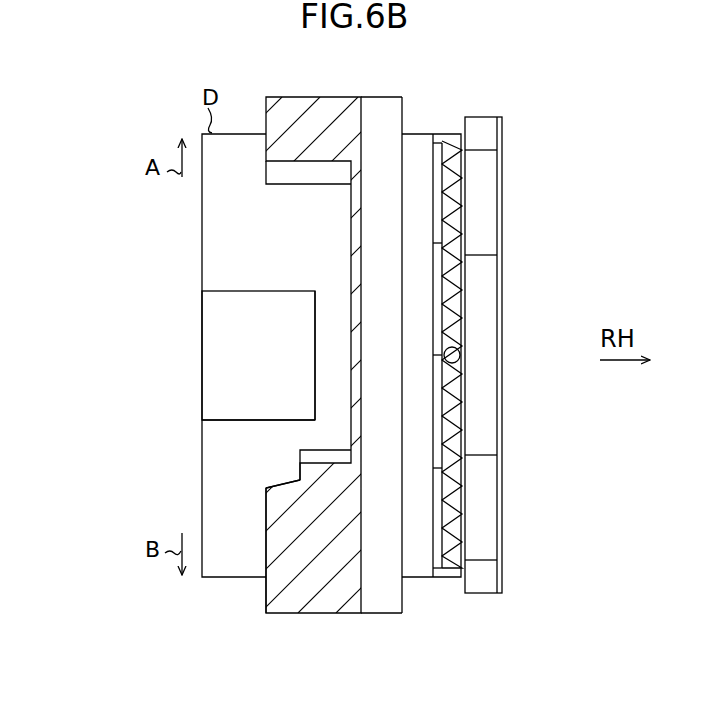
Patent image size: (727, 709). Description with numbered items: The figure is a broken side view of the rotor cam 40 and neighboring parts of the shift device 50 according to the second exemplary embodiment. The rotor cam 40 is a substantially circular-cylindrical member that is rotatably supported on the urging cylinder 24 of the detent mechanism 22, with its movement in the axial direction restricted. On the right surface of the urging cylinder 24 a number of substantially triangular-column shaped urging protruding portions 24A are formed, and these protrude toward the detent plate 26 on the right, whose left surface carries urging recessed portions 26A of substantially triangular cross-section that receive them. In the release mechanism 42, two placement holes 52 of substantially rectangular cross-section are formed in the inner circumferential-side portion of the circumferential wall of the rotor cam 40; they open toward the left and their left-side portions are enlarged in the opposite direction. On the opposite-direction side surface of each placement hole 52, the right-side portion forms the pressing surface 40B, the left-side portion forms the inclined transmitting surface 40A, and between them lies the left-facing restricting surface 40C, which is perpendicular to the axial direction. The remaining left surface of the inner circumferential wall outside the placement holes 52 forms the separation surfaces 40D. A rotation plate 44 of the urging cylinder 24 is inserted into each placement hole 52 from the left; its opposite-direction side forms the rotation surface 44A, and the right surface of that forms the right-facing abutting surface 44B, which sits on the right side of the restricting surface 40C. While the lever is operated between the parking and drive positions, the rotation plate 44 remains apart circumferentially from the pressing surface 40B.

The detent mechanism 22 is at (445, 115).
The urging cylinder 24 is at (202, 222).
The urging protruding portion 24A is at (446, 372).
The detent plate 26 is at (503, 172).
The urging recessed portion 26A is at (447, 360).
The rotor cam 40 is at (333, 97).
The transmitting surface 40A is at (285, 474).
The pressing surface 40B is at (318, 457).
The restricting surface 40C is at (300, 465).
The separation surface 40D is at (266, 540).
The release mechanism 42 is at (220, 472).
The rotation plate 44 is at (250, 291).
The rotation surface 44A is at (218, 421).
The abutting surface 44B is at (316, 310).
The shift device 50 is at (113, 177).
The placement hole 52 is at (287, 173).